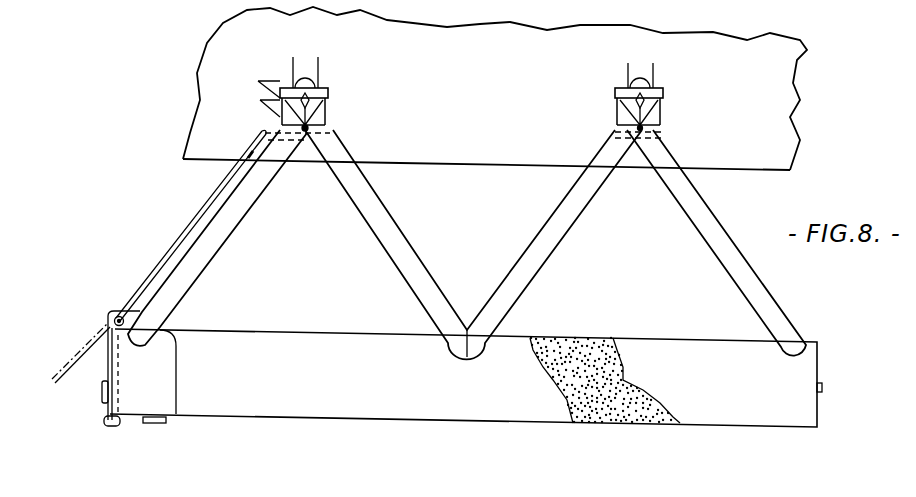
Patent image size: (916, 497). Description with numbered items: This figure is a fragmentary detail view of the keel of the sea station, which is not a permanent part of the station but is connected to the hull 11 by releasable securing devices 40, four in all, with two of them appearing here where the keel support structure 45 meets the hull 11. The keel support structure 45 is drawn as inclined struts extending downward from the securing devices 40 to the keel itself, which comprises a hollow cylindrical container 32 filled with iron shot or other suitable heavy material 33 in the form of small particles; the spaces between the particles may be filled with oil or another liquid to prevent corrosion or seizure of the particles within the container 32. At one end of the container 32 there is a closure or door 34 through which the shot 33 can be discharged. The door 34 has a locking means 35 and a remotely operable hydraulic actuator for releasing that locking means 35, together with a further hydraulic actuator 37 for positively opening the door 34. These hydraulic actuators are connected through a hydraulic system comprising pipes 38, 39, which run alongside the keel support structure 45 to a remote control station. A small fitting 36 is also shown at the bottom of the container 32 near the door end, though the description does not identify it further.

The hull 11 is at (486, 171).
The hollow cylindrical container 32 is at (377, 389).
The heavy material (iron shot) 33 is at (592, 338).
The closure or door 34 is at (105, 358).
The locking means 35 is at (112, 426).
The foot 36 is at (163, 424).
The hydraulic actuator 37 is at (102, 394).
The pipe 38 is at (191, 233).
The pipe 39 is at (190, 255).
The releasable securing device 40 is at (332, 108).
The keel support structure 45 is at (352, 188).